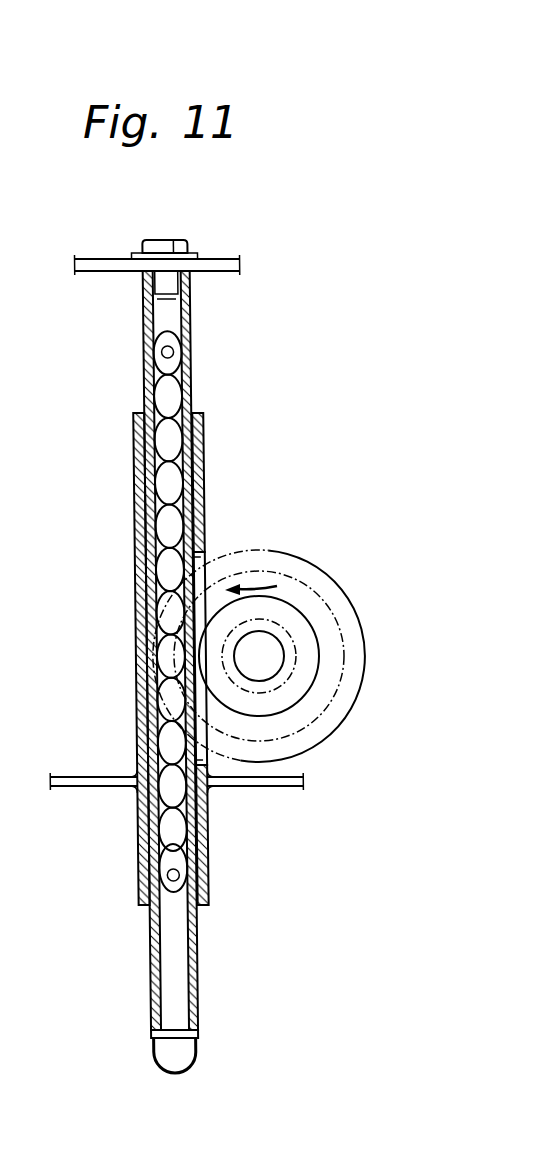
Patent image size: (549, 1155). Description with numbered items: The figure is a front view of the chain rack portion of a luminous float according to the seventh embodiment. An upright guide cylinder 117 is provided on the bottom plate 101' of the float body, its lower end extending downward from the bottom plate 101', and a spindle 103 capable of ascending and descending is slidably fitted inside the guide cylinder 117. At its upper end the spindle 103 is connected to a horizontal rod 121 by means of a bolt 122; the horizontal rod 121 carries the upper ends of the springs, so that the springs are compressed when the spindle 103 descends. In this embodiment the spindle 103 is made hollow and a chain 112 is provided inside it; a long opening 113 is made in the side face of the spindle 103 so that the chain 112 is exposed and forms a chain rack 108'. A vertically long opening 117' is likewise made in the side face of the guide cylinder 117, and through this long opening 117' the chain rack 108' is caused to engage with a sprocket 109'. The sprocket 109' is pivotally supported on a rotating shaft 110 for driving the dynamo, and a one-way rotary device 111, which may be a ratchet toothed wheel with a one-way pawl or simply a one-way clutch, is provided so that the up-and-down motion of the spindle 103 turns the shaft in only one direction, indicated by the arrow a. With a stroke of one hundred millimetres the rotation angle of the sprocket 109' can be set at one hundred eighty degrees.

The spindle 103 is at (201, 951).
The horizontal rod 121 is at (228, 258).
The bolt 122 is at (176, 247).
The guide cylinder 117 is at (106, 659).
The long opening 113 is at (203, 430).
The long opening 117' is at (241, 633).
The chain 112 is at (173, 495).
The chain rack 108' is at (236, 807).
The bottom plate 101' is at (168, 755).
The rotating shaft 110 is at (282, 680).
The one-way rotary device 111 is at (314, 667).
The sprocket 109' is at (296, 656).
The rotation direction a is at (266, 584).